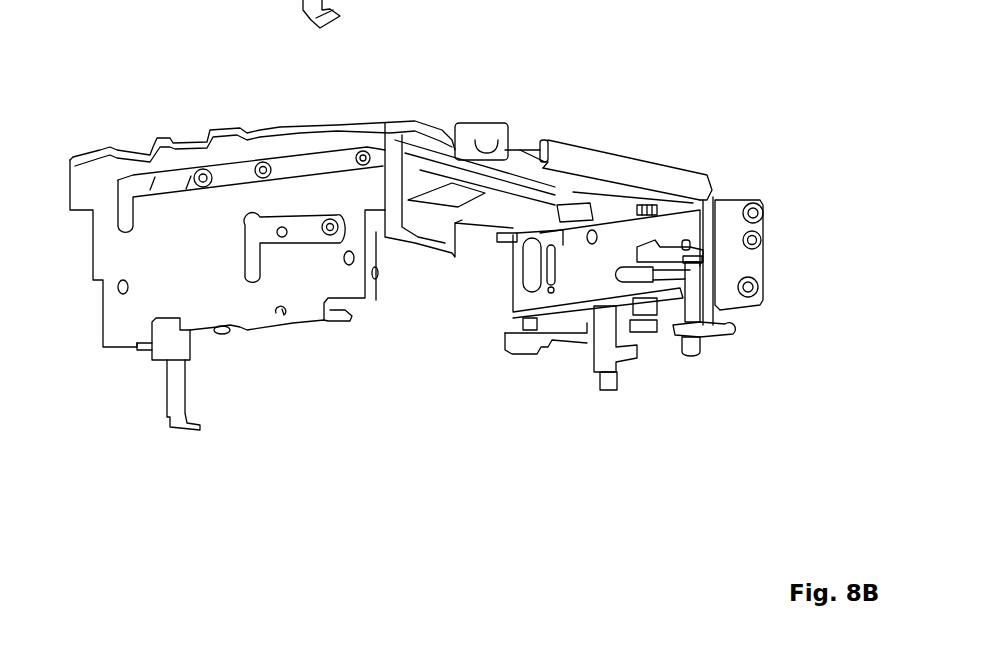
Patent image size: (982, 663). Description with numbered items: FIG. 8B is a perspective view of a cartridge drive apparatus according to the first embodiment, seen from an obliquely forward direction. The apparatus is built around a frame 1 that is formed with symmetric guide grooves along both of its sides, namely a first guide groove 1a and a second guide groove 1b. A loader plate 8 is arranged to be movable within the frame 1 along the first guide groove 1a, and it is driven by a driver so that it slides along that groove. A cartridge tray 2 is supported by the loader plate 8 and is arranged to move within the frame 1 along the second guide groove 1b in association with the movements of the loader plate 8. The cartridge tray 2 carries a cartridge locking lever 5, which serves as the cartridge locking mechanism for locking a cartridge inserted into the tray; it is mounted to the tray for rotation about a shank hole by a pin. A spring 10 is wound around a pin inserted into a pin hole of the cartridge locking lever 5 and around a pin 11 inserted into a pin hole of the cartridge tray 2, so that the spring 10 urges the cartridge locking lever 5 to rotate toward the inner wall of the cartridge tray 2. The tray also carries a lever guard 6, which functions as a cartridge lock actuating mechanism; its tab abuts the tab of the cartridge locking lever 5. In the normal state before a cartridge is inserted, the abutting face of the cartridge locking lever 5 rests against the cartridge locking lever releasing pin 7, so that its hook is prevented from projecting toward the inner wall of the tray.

The frame 1 is at (350, 143).
The first guide groove 1a is at (313, 157).
The second guide groove 1b is at (320, 237).
The cartridge tray 2 is at (537, 203).
The cartridge locking lever 5 is at (697, 287).
The lever guard 6 is at (590, 357).
The cartridge locking lever releasing pin 7 is at (733, 330).
The loader plate 8 is at (518, 173).
The spring 10 is at (633, 315).
The pin 11 is at (650, 315).